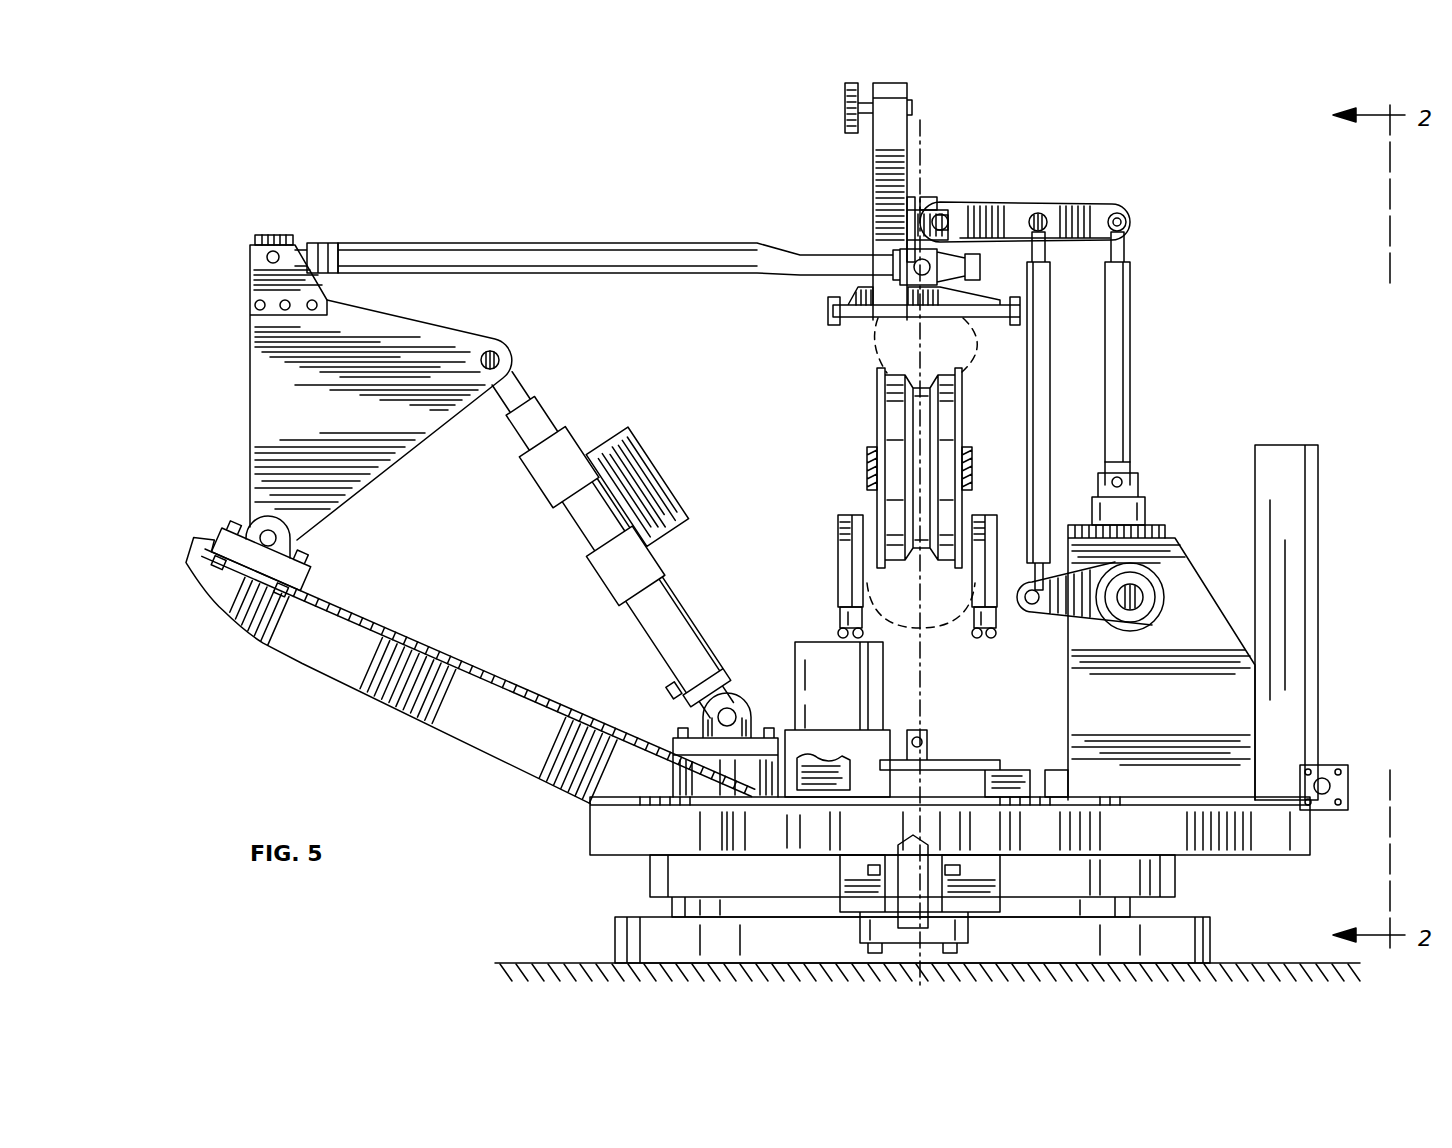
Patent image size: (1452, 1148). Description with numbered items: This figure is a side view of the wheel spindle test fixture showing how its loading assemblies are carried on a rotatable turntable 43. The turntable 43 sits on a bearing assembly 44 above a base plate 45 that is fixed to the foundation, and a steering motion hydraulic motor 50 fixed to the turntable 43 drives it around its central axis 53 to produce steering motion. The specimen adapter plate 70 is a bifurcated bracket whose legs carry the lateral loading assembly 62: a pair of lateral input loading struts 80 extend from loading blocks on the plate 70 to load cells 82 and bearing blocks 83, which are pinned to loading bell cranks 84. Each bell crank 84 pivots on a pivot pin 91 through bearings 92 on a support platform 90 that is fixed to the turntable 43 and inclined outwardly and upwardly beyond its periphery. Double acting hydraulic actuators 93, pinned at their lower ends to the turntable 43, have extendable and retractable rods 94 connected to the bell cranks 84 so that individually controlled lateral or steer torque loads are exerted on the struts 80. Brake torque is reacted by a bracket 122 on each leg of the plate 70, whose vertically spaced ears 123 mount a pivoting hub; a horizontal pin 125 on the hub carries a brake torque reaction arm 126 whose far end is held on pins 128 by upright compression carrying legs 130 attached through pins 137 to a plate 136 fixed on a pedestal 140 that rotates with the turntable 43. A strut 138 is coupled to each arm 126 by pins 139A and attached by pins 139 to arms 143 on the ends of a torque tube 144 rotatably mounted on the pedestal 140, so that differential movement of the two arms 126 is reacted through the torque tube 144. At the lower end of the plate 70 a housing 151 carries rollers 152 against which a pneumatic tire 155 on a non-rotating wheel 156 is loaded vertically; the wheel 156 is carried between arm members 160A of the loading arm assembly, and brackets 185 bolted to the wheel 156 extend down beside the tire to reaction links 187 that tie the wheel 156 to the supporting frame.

The turntable 43 is at (612, 830).
The bearing assembly 44 is at (670, 905).
The base plate 45 is at (615, 940).
The steering motion hydraulic motor 50 is at (795, 680).
The central axis 53 is at (922, 705).
The lateral loading assembly 62 is at (249, 288).
The specimen adapter plate 70 is at (872, 182).
The lateral input loading struts 80 is at (565, 250).
The load cells 82 is at (337, 245).
The bearing blocks 83 is at (290, 234).
The loading bell cranks 84 is at (372, 450).
The support platform 90 is at (345, 655).
The pivot pin 91 is at (266, 516).
The bearings 92 is at (232, 540).
The lateral input and steer torque hydraulic actuators 93 is at (598, 522).
The extendable and retractable rods 94 is at (538, 406).
The bracket 122 is at (918, 198).
The ears 123 is at (933, 206).
The horizontal pin 125 is at (1000, 220).
The brake torque reaction arm 126 is at (1087, 218).
The pins 128 is at (1128, 216).
The upright compression carrying legs 130 is at (1130, 345).
The plate 136 is at (1160, 524).
The pins 137 is at (1120, 478).
The strut 138 is at (1043, 328).
The pins 139 is at (1036, 612).
The pins 139A is at (1050, 218).
The pedestal 140 is at (1178, 566).
The arms 143 is at (1077, 603).
The torque tube 144 is at (1143, 597).
The housing 151 is at (850, 296).
The rollers 152 is at (845, 320).
The pneumatic tire 155 is at (966, 340).
The wheel 156 is at (876, 404).
The arm members 160A is at (866, 468).
The brackets 185 is at (850, 576).
The reaction links 187 is at (845, 618).